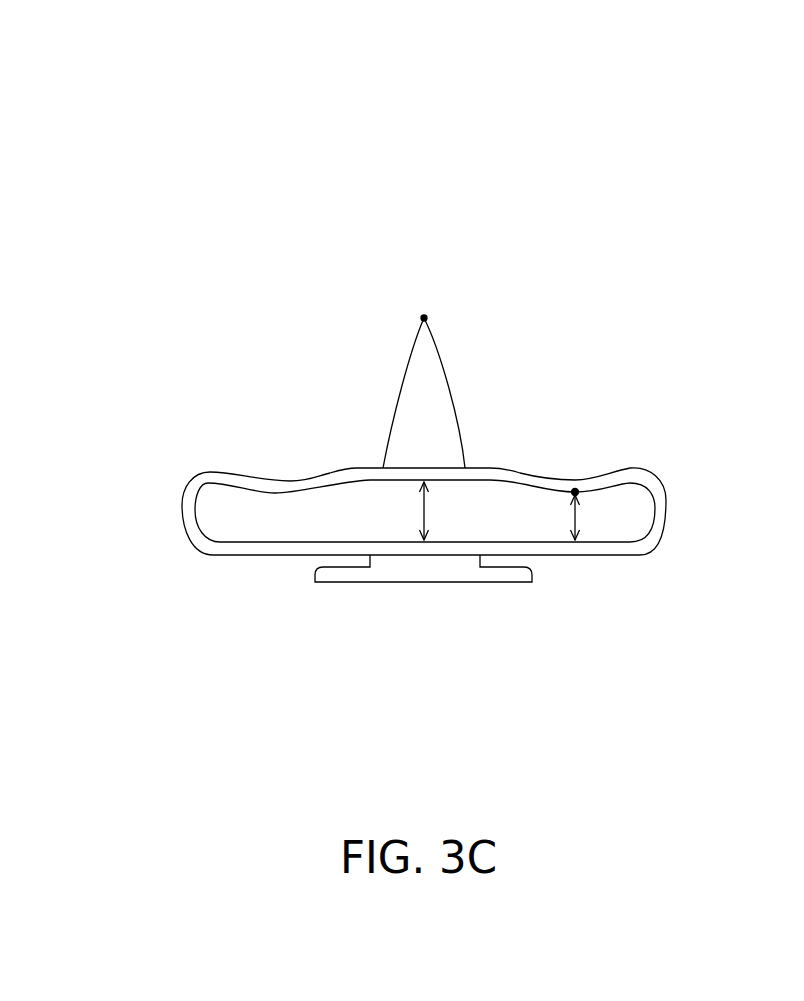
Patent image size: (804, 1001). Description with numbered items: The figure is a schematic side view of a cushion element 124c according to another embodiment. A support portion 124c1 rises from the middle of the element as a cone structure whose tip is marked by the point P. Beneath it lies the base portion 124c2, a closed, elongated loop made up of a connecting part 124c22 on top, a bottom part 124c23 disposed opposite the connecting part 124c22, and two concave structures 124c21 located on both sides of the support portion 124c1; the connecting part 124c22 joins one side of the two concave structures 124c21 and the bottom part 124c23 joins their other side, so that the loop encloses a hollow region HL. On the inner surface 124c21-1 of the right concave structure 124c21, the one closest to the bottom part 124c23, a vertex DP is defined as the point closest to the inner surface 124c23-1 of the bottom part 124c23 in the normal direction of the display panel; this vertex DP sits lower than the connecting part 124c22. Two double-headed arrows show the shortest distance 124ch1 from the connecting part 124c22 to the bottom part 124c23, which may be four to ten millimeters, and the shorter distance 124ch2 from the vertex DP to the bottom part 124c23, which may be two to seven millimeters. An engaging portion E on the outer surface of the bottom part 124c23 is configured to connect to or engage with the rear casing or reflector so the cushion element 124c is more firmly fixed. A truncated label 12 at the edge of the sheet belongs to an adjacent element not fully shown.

The cushion element 124c is at (232, 142).
The support portion 124c1 is at (452, 376).
The base portion 124c2 is at (667, 507).
The concave structure 124c21 is at (253, 478).
The inner surface of the concave structure 124c21-1 is at (543, 491).
The connecting part 124c22 is at (373, 467).
The bottom part 124c23 is at (243, 538).
The inner surface of the bottom part 124c23-1 is at (311, 541).
The shortest distance from the connecting part to the bottom part 124ch1 is at (424, 510).
The shortest distance from the vertex to the bottom part 124ch2 is at (575, 519).
The peak point P is at (420, 318).
The vertex DP is at (575, 487).
The hollow region HL is at (220, 518).
The engaging portion E is at (425, 583).
The truncated numeral 12 is at (792, 98).